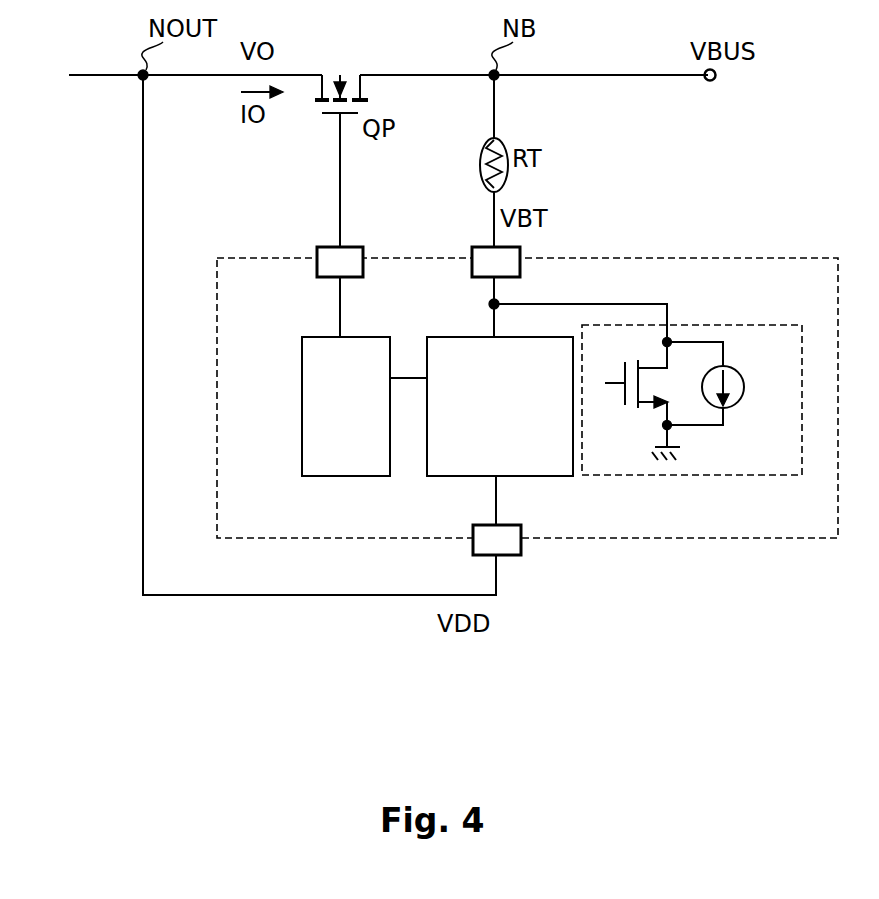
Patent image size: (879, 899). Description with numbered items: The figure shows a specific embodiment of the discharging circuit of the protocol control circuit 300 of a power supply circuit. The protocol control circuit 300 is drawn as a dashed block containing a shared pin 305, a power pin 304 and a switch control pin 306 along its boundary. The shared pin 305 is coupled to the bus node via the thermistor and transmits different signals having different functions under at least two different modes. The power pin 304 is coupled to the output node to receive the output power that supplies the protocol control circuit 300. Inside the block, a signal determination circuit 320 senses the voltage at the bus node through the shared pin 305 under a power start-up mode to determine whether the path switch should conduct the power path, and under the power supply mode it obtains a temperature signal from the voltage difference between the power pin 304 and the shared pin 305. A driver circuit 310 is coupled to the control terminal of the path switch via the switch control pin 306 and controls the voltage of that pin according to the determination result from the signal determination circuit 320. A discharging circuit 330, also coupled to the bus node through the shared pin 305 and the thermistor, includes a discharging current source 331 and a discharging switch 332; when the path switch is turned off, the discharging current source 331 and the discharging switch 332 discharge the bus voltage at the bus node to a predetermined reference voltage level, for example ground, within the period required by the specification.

The protocol control circuit 300 is at (527, 398).
The power pin 304 is at (497, 540).
The shared pin 305 is at (496, 262).
The switch control pin 306 is at (340, 262).
The driver circuit 310 is at (346, 406).
The signal determination circuit 320 is at (500, 406).
The discharging circuit 330 is at (692, 400).
The discharging current source 331 is at (780, 387).
The discharging switch 332 is at (630, 381).